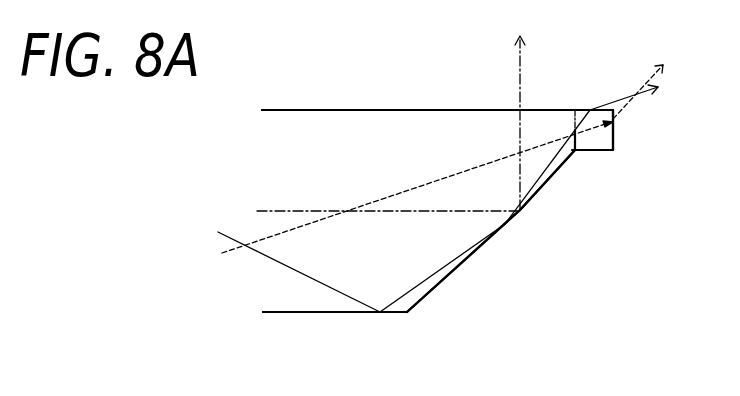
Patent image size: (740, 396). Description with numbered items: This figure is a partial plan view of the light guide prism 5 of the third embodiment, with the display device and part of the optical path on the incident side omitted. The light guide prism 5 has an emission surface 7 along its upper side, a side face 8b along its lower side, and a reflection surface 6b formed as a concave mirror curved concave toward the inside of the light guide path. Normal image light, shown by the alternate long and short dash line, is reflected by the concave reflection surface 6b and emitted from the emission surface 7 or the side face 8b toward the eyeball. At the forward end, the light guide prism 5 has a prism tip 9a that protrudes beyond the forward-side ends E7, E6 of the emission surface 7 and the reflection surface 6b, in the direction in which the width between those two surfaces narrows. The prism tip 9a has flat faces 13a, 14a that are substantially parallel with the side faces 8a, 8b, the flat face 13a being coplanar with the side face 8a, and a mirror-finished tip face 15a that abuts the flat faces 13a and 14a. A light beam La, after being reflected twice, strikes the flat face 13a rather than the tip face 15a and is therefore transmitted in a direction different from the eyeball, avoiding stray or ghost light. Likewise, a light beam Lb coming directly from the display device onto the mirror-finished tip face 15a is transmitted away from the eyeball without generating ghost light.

The light guide prism 5 is at (291, 163).
The emission surface 7 is at (493, 110).
The side face 8a is at (437, 86).
The side face 8b is at (308, 313).
The reflection surface 6b is at (470, 257).
The flat face 13a is at (590, 110).
The flat face 14a is at (593, 150).
The tip face 15a is at (617, 126).
The prism tip 9a is at (602, 137).
The forward-side end of the emission surface E7 is at (575, 110).
The forward-side end of the reflection surface E6 is at (576, 150).
The light beam La is at (317, 280).
The light beam Lb is at (428, 184).